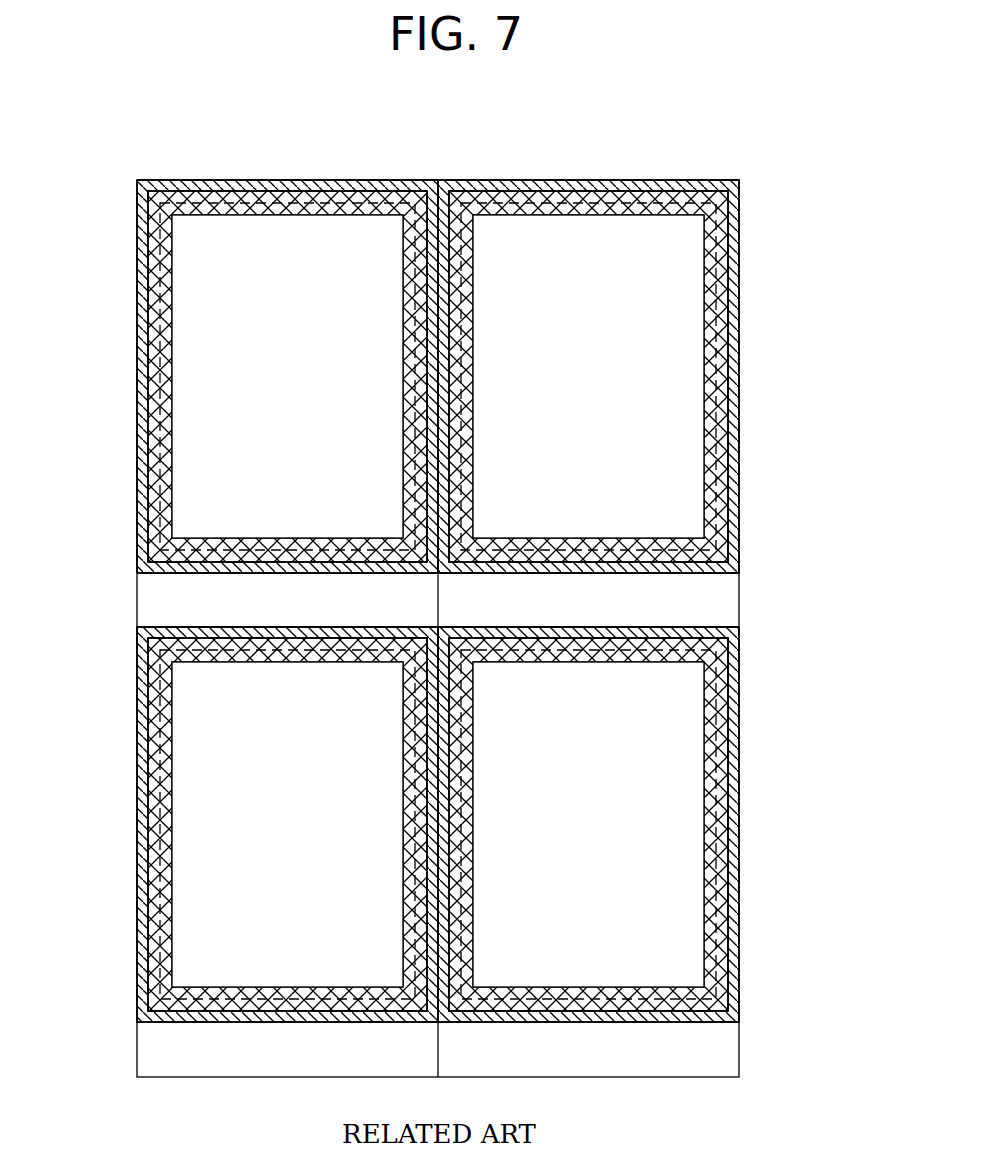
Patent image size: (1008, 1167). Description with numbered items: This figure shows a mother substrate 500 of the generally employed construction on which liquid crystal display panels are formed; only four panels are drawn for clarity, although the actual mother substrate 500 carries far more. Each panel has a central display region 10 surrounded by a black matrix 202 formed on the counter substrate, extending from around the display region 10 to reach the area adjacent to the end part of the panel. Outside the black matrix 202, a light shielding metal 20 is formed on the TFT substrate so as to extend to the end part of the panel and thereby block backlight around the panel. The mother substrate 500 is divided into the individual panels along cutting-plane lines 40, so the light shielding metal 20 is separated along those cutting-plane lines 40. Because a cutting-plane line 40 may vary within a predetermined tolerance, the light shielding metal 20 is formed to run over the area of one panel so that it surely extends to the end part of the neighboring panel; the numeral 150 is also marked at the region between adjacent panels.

The mother substrate 500 is at (210, 142).
The light shielding metal 20 is at (740, 233).
The black matrix 202 is at (677, 205).
The display region 10 is at (675, 330).
The cutting region 150 is at (705, 591).
The cutting-plane line 40 is at (185, 628).